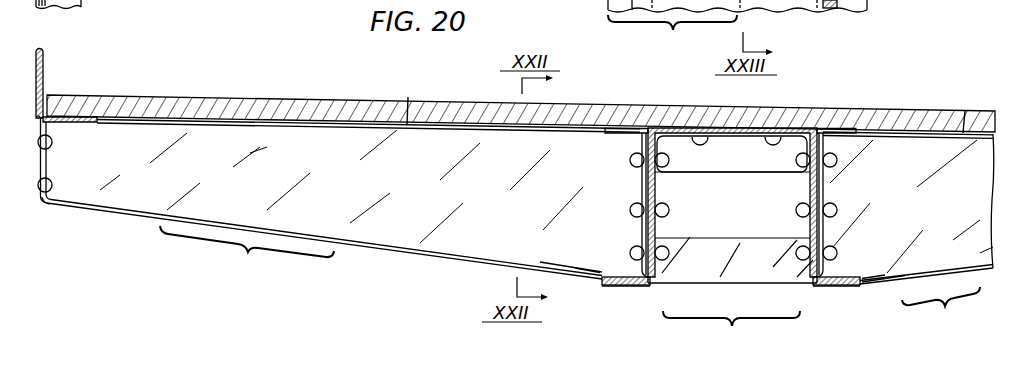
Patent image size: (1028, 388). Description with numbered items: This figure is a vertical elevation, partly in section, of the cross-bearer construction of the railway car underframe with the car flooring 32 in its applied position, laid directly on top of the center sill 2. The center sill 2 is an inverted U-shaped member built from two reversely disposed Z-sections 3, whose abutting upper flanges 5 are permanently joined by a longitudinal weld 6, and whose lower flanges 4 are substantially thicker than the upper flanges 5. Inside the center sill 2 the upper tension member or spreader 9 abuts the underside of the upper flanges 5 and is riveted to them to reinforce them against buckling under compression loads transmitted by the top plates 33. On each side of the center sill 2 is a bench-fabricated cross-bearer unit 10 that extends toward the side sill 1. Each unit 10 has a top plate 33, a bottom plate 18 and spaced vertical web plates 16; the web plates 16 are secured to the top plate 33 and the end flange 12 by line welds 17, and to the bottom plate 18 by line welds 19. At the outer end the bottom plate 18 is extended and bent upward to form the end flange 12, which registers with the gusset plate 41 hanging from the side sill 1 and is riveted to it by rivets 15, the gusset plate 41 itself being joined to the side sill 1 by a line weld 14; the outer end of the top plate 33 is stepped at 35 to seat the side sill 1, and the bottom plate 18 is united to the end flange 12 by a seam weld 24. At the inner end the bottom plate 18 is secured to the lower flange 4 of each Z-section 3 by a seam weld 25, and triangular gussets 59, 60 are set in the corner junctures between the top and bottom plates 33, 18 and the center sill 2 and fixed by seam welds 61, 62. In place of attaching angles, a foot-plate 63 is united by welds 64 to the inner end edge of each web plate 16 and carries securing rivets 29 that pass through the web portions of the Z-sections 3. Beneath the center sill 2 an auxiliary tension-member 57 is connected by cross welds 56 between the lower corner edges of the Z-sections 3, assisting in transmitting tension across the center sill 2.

The side sill 1 is at (44, 58).
The center sill 2 is at (704, 185).
The Z-section 3 is at (642, 148).
The lower flange 4 is at (617, 316).
The upper flange 5 is at (697, 142).
The longitudinal weld 6 is at (727, 136).
The web section 9 is at (747, 173).
The unit 10 is at (570, 280).
The end flange 12 is at (52, 183).
The line weld 14 is at (36, 139).
The rivets 15 is at (38, 184).
The web plate 16 is at (546, 201).
The line weld 17 is at (100, 128).
The bottom plate 18 is at (400, 250).
The line weld 19 is at (265, 228).
The seam weld 24 is at (39, 203).
The seam weld 25 is at (600, 288).
The securing rivets 29 is at (664, 212).
The flooring 32 is at (265, 100).
The top plate 33 is at (408, 97).
The step 35 is at (95, 120).
The gusset plate 41 is at (37, 193).
The cross welds 56 is at (658, 284).
The auxiliary tension-member 57 is at (733, 284).
The triangular gusset 59 is at (628, 128).
The triangular gusset 60 is at (560, 268).
The seam weld 61 is at (665, 130).
The seam weld 62 is at (583, 270).
The foot-plate 63 is at (657, 188).
The welds 64 is at (641, 189).